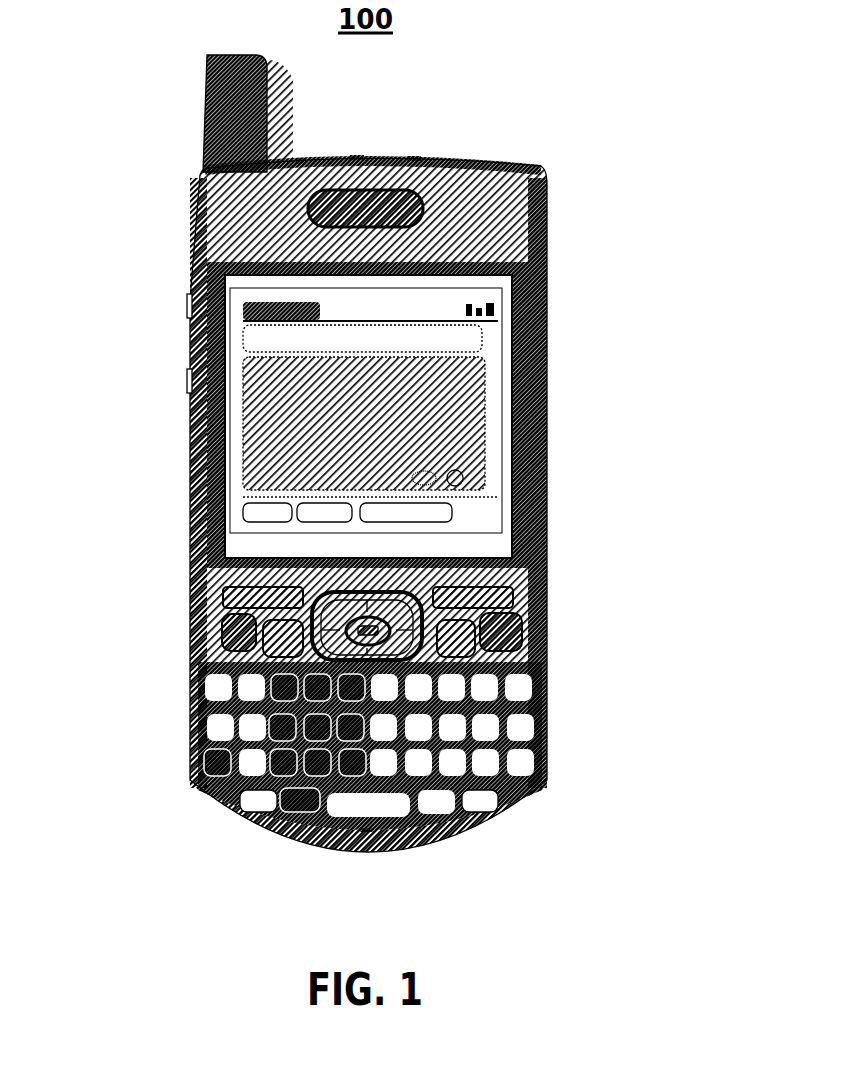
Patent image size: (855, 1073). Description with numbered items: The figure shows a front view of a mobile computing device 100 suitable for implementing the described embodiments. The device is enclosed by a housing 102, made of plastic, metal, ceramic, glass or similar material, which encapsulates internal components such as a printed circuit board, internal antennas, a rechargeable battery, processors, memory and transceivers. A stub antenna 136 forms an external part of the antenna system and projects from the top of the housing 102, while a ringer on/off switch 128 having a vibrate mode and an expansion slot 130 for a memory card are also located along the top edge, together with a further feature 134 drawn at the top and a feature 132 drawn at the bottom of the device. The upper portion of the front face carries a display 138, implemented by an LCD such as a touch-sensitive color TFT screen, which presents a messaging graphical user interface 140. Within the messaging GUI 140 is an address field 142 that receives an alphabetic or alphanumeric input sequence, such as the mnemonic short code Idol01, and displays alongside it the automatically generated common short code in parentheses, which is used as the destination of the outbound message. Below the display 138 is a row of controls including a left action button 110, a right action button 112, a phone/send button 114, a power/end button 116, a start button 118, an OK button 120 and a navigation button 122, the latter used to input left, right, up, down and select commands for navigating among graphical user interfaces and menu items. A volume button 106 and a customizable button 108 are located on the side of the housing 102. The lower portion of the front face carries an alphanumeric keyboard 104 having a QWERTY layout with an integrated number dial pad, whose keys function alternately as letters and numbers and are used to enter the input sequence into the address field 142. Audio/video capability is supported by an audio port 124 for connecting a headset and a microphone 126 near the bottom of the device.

The mobile computing device 100 is at (350, 482).
The housing 102 is at (540, 215).
The alphanumeric keyboard 104 is at (185, 662).
The volume button 106 is at (190, 306).
The customizable button 108 is at (190, 381).
The left action button 110 is at (226, 593).
The right action button 112 is at (512, 595).
The phone/send button 114 is at (222, 625).
The power/end button 116 is at (520, 627).
The start button 118 is at (265, 657).
The OK button 120 is at (457, 658).
The navigation button 122 is at (387, 655).
The audio port 124 is at (247, 822).
The microphone 126 is at (486, 820).
The ringer on/off switch 128 is at (414, 156).
The expansion slot 130 is at (357, 155).
The microphone 132 is at (367, 834).
The indicator light 134 is at (301, 158).
The stub antenna 136 is at (205, 111).
The display 138 is at (513, 383).
The messaging graphical user interface 140 is at (502, 450).
The address field 142 is at (482, 336).